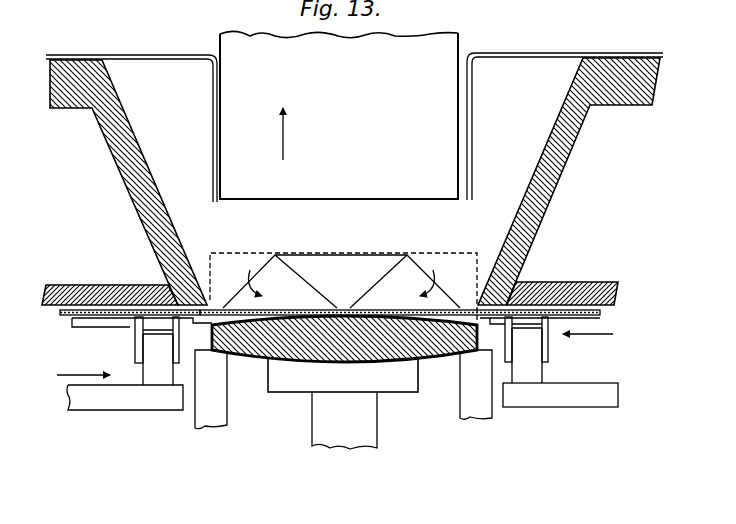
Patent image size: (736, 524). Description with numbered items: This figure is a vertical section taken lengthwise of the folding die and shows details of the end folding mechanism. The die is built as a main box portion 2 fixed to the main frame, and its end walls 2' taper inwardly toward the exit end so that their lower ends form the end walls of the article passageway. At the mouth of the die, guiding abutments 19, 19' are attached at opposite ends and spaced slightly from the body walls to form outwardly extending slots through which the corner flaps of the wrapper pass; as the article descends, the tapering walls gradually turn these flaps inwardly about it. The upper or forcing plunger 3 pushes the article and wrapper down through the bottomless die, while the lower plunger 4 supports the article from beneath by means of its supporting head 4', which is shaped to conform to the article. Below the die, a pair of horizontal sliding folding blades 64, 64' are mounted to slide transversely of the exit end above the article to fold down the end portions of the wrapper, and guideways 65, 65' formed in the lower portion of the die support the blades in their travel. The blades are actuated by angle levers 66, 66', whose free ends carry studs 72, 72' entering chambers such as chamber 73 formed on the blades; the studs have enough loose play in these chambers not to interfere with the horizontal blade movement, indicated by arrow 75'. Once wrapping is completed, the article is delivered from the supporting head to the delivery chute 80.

The main box portion 2 is at (569, 162).
The end walls 2' is at (289, 182).
The upper or forcing plunger 3 is at (339, 115).
The lower plunger 4 is at (357, 420).
The supporting head 4' is at (356, 376).
The guiding abutment 19 is at (565, 126).
The guiding abutment 19' is at (131, 128).
The horizontal sliding folding blade 64 is at (562, 276).
The horizontal sliding folding blade 64' is at (110, 285).
The guideway 65 is at (425, 319).
The guideway 65' is at (124, 331).
The angle lever 66 is at (560, 408).
The angle lever 66' is at (125, 409).
The stud 72 is at (548, 351).
The stud 72' is at (161, 387).
The chamber 73 is at (548, 350).
The direction of movement 75' is at (95, 358).
The delivery chute 80 is at (225, 415).